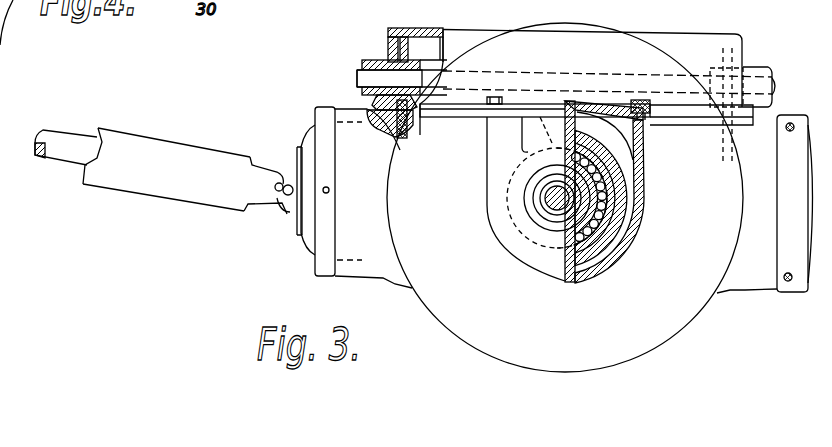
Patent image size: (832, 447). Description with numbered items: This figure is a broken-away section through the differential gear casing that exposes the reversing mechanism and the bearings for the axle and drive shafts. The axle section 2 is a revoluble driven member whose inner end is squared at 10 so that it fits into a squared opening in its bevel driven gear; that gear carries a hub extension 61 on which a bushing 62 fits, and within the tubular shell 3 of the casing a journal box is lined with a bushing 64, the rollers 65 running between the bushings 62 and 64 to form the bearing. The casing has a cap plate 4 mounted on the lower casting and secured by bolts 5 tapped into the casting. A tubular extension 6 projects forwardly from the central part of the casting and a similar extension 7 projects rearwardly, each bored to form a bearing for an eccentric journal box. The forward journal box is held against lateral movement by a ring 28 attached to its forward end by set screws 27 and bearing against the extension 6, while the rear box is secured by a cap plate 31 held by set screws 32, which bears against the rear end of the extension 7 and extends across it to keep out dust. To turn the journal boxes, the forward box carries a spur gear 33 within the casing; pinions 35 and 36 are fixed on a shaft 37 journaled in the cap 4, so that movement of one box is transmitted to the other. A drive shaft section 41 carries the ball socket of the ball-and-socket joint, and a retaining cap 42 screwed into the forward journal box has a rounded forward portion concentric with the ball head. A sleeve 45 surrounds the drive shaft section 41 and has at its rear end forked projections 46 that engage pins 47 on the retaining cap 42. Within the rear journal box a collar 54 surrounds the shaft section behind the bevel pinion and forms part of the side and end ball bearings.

The axle section 2 is at (552, 202).
The tubular shell 3 is at (670, 317).
The cap plate 4 is at (647, 53).
The bolts 5 is at (494, 99).
The tubular extension 6 is at (358, 268).
The tubular extension 7 is at (748, 278).
The squared portion 10 is at (628, 208).
The set screws 27 is at (329, 190).
The ring 28 is at (326, 172).
The cap plate 31 is at (793, 178).
The set screws 32 is at (792, 277).
The spur gear 33 is at (372, 110).
The pinion 35 is at (412, 33).
The pinion 36 is at (729, 53).
The shaft 37 is at (358, 76).
The drive shaft section 41 is at (65, 157).
The retaining cap 42 is at (289, 213).
The sleeve 45 is at (136, 143).
The forked projections 46 is at (258, 175).
The pins 47 is at (276, 193).
The collar 54 is at (723, 162).
The hub extension 61 is at (553, 165).
The bushing 62 is at (553, 227).
The bushing 64 is at (582, 172).
The rollers 65 is at (627, 166).